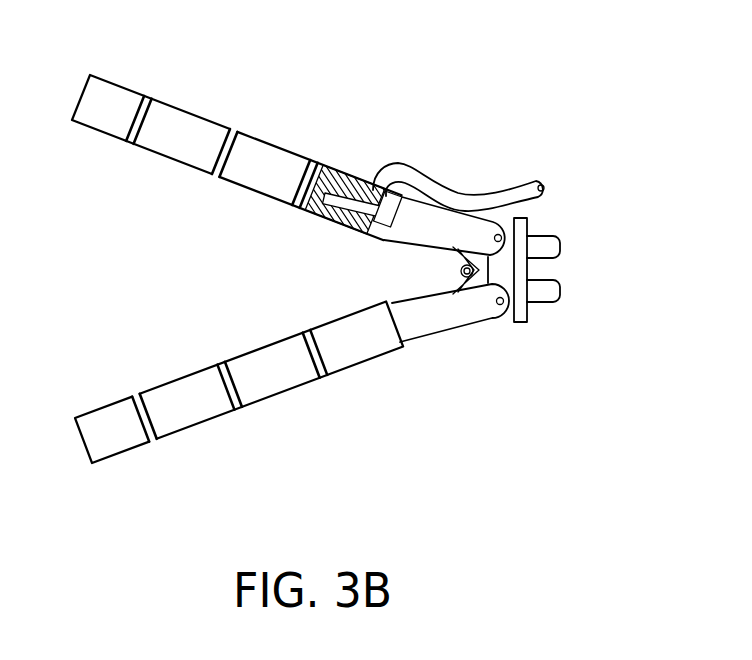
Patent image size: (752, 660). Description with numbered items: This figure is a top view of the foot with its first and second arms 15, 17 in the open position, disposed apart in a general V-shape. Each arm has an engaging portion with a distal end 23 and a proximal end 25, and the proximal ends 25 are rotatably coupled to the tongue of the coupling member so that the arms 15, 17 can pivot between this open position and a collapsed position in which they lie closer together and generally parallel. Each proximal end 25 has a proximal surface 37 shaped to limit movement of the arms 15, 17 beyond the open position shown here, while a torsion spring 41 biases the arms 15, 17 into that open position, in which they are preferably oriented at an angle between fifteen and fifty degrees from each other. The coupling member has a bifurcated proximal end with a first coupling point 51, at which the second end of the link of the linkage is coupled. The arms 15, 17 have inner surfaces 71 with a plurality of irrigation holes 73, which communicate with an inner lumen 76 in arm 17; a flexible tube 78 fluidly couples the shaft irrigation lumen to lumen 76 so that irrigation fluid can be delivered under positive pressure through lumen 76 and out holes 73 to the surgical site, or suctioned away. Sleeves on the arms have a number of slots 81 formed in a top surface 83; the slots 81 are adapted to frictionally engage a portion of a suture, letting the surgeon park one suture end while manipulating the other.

The second arm 17 is at (185, 106).
The top surface 83 is at (162, 140).
The slots 81 is at (223, 167).
The irrigation holes 73 is at (350, 226).
The inner lumen 76 is at (348, 193).
The flexible tube 78 is at (433, 188).
The proximal surface 37 is at (527, 232).
The first coupling point 51 is at (572, 269).
The torsion spring 41 is at (460, 268).
The proximal end 25 is at (462, 335).
The first arm 15 is at (278, 402).
The inner surfaces 71 is at (148, 387).
The distal end 23 is at (90, 462).